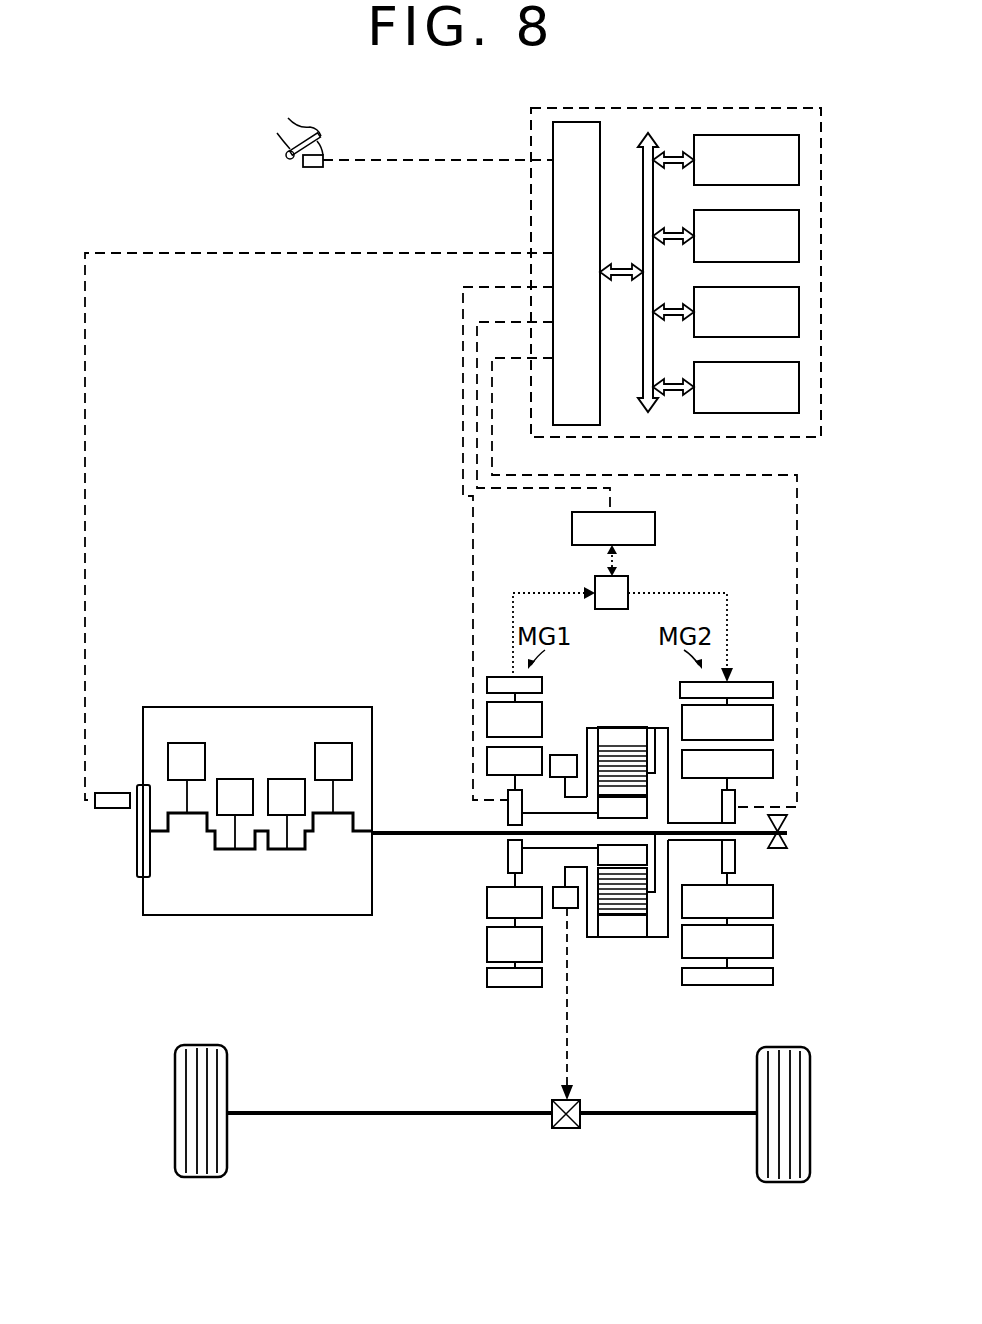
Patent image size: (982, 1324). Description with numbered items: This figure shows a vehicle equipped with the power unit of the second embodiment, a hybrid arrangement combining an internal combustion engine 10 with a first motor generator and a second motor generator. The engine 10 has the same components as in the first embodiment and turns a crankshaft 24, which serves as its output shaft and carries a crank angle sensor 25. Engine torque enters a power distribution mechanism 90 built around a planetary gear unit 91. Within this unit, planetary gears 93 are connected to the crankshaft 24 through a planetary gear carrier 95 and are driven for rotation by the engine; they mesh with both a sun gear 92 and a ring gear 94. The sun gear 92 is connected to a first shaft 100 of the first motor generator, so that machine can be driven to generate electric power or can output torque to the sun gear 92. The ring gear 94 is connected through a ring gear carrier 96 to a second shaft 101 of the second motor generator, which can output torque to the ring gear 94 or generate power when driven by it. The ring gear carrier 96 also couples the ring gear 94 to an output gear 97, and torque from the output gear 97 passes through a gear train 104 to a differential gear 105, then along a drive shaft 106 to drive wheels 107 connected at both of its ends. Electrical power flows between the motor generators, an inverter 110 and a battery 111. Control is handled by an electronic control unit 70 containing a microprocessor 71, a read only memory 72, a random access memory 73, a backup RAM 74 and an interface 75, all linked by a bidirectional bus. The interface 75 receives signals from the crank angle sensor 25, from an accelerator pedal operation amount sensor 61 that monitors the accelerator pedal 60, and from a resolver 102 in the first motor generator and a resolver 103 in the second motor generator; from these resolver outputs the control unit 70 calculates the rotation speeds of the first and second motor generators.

The internal combustion engine 10 is at (233, 679).
The crankshaft 24 is at (579, 857).
The crank angle sensor 25 is at (108, 808).
The accelerator pedal 60 is at (320, 139).
The accelerator pedal operation amount sensor 61 is at (315, 167).
The electronic control unit 70 is at (693, 437).
The microprocessor 71 is at (799, 160).
The read only memory 72 is at (799, 236).
The random access memory 73 is at (799, 312).
The backup RAM 74 is at (799, 387).
The interface 75 is at (601, 411).
The power distribution mechanism 90 is at (622, 806).
The planetary gear unit 91 is at (632, 714).
The sun gear 92 is at (640, 808).
The planetary gears 93 is at (618, 767).
The ring gear 94 is at (623, 927).
The planetary gear carrier 95 is at (654, 728).
The ring gear carrier 96 is at (663, 937).
The output gear 97 is at (568, 906).
The first shaft 100 is at (574, 812).
The second shaft 101 is at (698, 841).
The resolver 102 is at (508, 815).
The resolver 103 is at (735, 803).
The gear train 104 is at (568, 1004).
The differential gear 105 is at (567, 1128).
The drive shaft 106 is at (652, 1117).
The drive wheels 107 is at (177, 1105).
The inverter 110 is at (620, 587).
The battery 111 is at (640, 528).